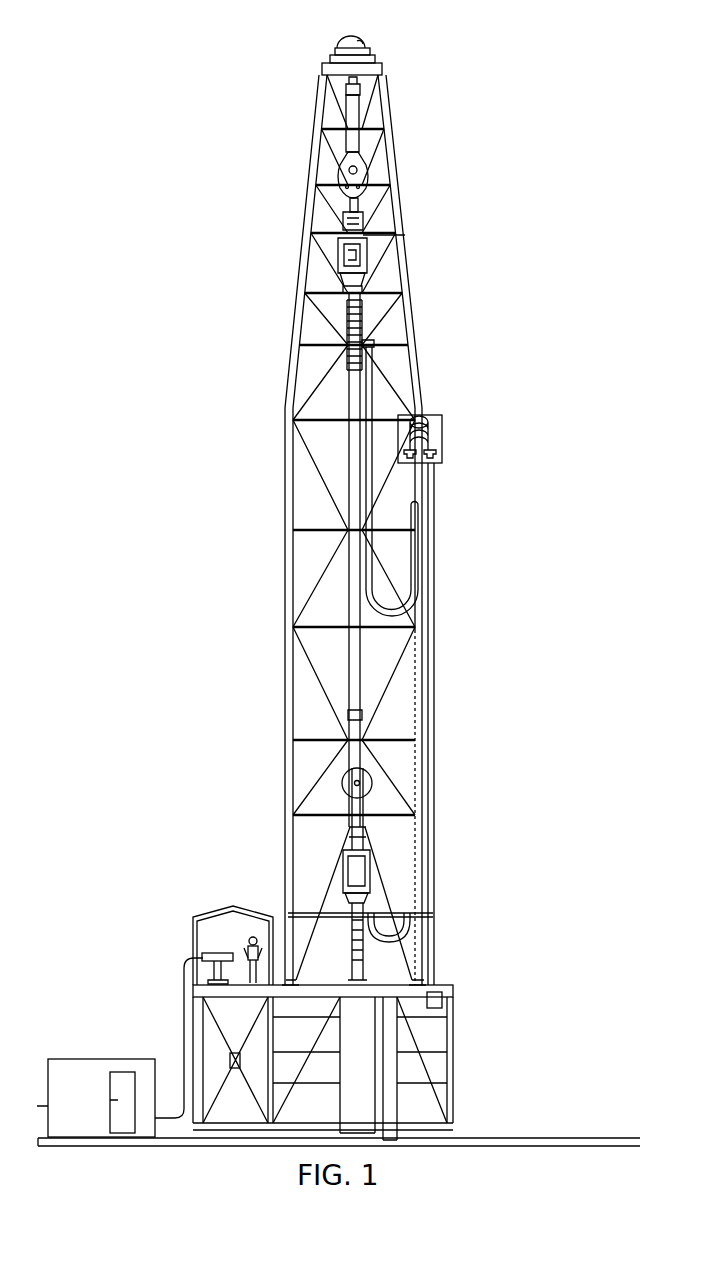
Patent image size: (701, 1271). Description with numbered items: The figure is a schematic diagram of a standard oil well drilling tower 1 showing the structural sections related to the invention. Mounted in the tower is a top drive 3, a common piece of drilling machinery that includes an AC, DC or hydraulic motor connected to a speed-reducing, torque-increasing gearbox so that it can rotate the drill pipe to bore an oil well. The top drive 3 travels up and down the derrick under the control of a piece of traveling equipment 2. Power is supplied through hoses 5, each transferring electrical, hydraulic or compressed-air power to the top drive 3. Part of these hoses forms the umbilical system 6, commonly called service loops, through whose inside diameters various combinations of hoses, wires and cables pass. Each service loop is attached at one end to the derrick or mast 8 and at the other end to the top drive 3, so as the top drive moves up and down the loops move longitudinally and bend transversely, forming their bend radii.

The oil well drilling tower 1 is at (80, 214).
The traveling equipment 2 is at (338, 163).
The top drive 3 is at (344, 263).
The hoses 5 is at (368, 517).
The umbilical system 6 is at (406, 568).
The derrick 8 is at (441, 430).